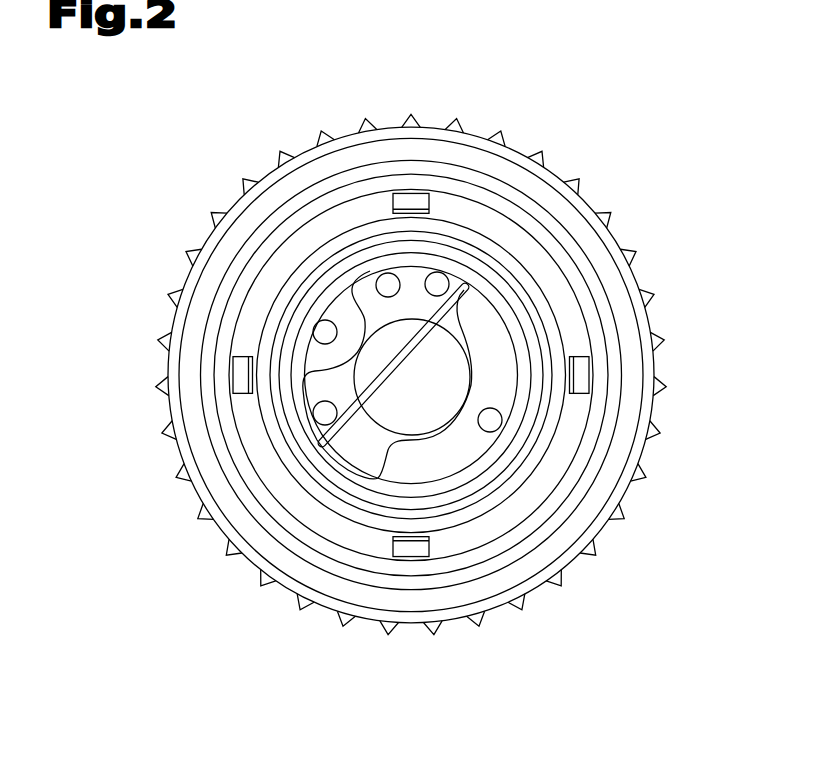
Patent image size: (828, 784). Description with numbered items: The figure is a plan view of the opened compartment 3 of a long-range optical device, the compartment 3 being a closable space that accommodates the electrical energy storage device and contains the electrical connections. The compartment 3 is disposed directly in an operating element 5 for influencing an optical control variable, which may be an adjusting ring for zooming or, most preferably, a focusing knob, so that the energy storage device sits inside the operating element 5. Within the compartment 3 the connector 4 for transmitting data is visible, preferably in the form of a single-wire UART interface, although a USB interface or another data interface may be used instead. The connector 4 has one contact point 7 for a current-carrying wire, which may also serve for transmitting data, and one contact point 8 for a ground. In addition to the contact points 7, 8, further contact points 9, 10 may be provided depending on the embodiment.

The compartment 3 is at (482, 322).
The connector 4 is at (363, 452).
The operating element 5 is at (257, 217).
The contact point 7 is at (448, 365).
The contact point 8 is at (323, 413).
The contact point 9 is at (388, 283).
The contact point 10 is at (437, 283).